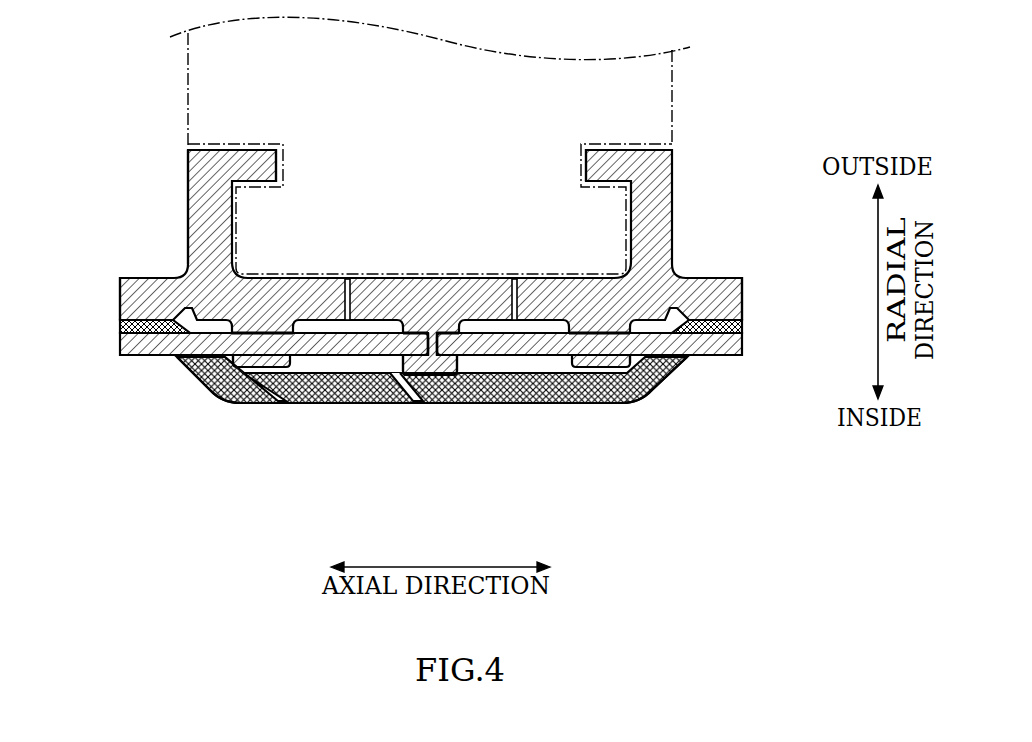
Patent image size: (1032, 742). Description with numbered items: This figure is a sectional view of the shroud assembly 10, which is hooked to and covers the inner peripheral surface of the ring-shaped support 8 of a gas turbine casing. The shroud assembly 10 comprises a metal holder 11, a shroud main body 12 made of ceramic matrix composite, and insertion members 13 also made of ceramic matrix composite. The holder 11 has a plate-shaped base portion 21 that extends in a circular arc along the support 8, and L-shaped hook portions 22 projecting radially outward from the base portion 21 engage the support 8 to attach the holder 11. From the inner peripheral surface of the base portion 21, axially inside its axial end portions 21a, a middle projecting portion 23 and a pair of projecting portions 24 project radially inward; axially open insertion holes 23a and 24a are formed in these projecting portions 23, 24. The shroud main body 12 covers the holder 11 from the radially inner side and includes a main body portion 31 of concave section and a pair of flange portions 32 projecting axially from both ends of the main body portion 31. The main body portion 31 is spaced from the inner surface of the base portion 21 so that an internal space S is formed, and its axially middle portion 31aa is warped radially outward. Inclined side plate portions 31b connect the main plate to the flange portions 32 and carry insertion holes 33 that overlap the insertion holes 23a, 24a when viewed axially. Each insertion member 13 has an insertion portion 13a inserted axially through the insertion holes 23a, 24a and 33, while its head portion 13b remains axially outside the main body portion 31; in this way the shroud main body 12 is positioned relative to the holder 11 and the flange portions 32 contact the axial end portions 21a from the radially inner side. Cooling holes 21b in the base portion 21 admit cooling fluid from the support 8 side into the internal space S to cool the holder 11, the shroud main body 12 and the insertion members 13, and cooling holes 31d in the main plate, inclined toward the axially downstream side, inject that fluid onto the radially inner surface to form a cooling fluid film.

The support 8 is at (678, 78).
The shroud assembly 10 is at (741, 164).
The holder 11 is at (180, 214).
The shroud main body 12 is at (322, 416).
The insertion member 13 is at (751, 348).
The insertion portion 13a is at (350, 357).
The head portion 13b is at (132, 360).
The base portion 21 is at (302, 277).
The axial end portion 21a is at (742, 292).
The cooling hole 21b is at (514, 280).
The hook portion 22 is at (641, 146).
The middle projecting portion 23 is at (404, 376).
The insertion hole 23a is at (433, 333).
The projecting portion 24 is at (603, 365).
The insertion hole 24a is at (645, 367).
The main body portion 31 is at (502, 403).
The axially middle portion 31aa is at (447, 403).
The side plate portion 31b is at (663, 377).
The cooling hole 31d is at (415, 403).
The flange portion 32 is at (742, 327).
The insertion hole 33 is at (687, 355).
The internal space S is at (535, 363).